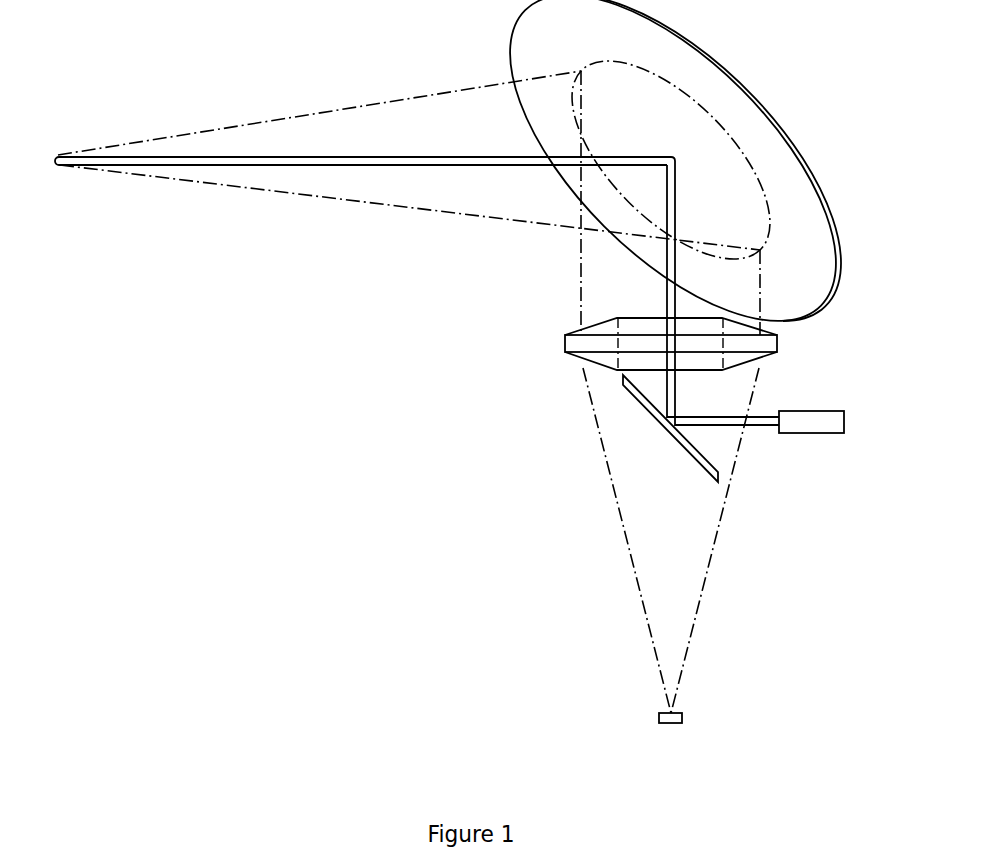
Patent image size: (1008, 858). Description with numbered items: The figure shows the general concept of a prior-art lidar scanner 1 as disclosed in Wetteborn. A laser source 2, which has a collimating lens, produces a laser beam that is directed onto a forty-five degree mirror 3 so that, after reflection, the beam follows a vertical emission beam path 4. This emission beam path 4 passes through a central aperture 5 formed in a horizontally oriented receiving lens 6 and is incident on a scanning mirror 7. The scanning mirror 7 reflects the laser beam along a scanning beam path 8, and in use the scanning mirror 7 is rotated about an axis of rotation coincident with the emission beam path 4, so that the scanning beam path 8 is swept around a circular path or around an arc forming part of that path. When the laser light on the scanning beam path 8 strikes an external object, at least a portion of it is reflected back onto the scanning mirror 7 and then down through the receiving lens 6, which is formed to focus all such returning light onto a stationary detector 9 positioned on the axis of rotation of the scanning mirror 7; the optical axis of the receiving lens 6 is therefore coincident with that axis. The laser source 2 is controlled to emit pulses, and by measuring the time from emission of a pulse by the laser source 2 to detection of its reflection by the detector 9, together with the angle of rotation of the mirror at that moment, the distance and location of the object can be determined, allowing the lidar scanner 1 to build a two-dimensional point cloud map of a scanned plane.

The lidar scanner 1 is at (285, 390).
The laser source 2 is at (819, 420).
The 45° mirror 3 is at (657, 415).
The emission beam path 4 is at (672, 203).
The central aperture 5 is at (634, 358).
The receiving lens 6 is at (572, 344).
The scanning mirror 7 is at (712, 72).
The scanning beam path 8 is at (292, 162).
The detector 9 is at (675, 715).